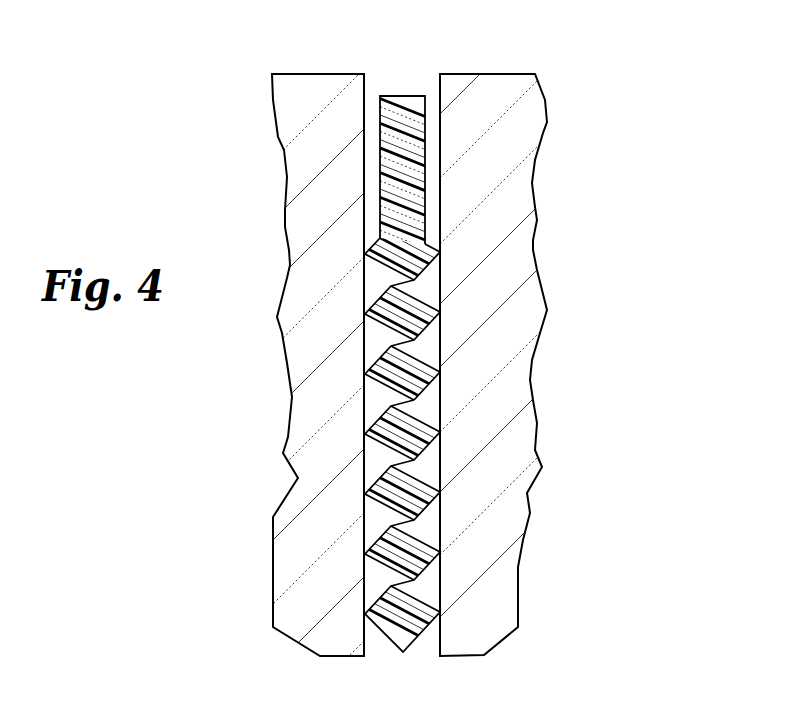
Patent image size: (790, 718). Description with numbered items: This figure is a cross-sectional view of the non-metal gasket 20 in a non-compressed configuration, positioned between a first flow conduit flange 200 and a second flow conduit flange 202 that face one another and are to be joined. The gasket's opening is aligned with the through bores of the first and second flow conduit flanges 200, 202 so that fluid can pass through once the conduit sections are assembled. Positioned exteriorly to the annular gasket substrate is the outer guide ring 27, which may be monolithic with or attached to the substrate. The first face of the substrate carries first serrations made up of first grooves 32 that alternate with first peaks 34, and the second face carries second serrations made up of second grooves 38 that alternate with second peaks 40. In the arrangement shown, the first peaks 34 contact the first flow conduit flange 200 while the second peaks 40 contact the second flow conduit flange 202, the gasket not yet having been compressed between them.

The first flow conduit flange 200 is at (293, 133).
The second flow conduit flange 202 is at (510, 133).
The outer guide ring 27 is at (403, 97).
The non-metal gasket 20 is at (422, 192).
The first grooves 32 is at (392, 348).
The first peaks 34 is at (365, 378).
The second grooves 38 is at (392, 348).
The second peaks 40 is at (365, 378).